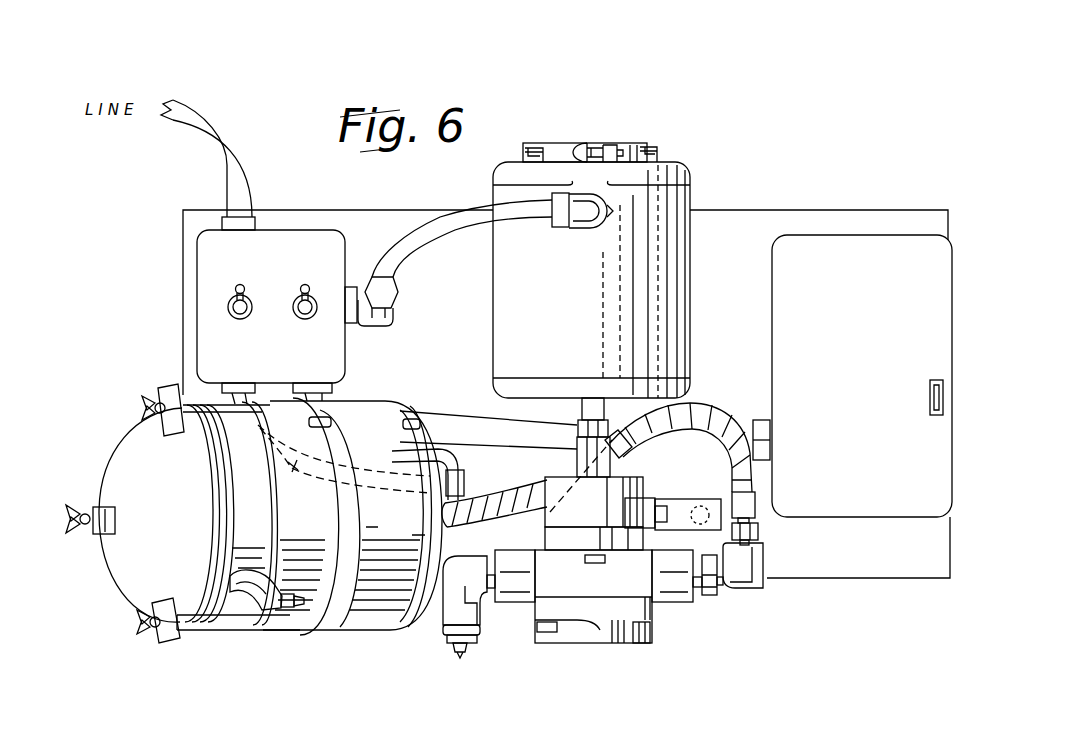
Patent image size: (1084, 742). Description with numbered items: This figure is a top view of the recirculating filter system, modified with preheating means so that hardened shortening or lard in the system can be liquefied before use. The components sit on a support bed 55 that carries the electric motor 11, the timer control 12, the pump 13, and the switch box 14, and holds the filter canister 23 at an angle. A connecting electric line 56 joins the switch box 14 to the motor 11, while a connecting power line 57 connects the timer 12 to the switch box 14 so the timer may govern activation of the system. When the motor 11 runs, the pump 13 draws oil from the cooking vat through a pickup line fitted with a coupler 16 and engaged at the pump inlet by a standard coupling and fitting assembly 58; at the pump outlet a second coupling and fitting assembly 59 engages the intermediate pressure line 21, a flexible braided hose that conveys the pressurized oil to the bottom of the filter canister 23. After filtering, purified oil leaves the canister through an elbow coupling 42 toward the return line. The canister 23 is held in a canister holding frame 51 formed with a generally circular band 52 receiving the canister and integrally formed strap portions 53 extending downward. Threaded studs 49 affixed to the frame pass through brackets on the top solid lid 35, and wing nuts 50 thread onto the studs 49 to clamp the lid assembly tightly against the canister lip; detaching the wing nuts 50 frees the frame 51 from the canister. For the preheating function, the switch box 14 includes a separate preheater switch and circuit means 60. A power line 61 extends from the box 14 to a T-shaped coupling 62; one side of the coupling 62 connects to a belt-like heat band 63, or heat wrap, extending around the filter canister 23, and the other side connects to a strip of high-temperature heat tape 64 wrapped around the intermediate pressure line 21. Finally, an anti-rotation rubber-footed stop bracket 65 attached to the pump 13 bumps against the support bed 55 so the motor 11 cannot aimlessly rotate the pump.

The electric motor 11 is at (588, 303).
The timer control 12 is at (870, 391).
The pump 13 is at (590, 645).
The switch box 14 is at (309, 244).
The coupler 16 is at (441, 641).
The intermediate pressure line 21 is at (633, 442).
The filter canister 23 is at (243, 485).
The top solid lid 35 is at (132, 563).
The elbow coupling 42 is at (258, 608).
The threaded studs 49 is at (182, 393).
The wing nuts 50 is at (165, 393).
The canister holding frame 51 is at (287, 627).
The circular band 52 is at (313, 539).
The strap portions 53 is at (308, 620).
The support bed 55 is at (750, 223).
The connecting electric line 56 is at (462, 213).
The connecting power line 57 is at (472, 425).
The inlet coupling and fitting assembly 58 is at (518, 602).
The outlet coupling and fitting assembly 59 is at (680, 600).
The preheater switch and circuit means 60 is at (205, 297).
The power line 61 is at (344, 466).
The coupling 62 is at (466, 481).
The heat band 63 is at (367, 433).
The heat tape 64 is at (525, 497).
The anti-rotation stop bracket 65 is at (678, 508).